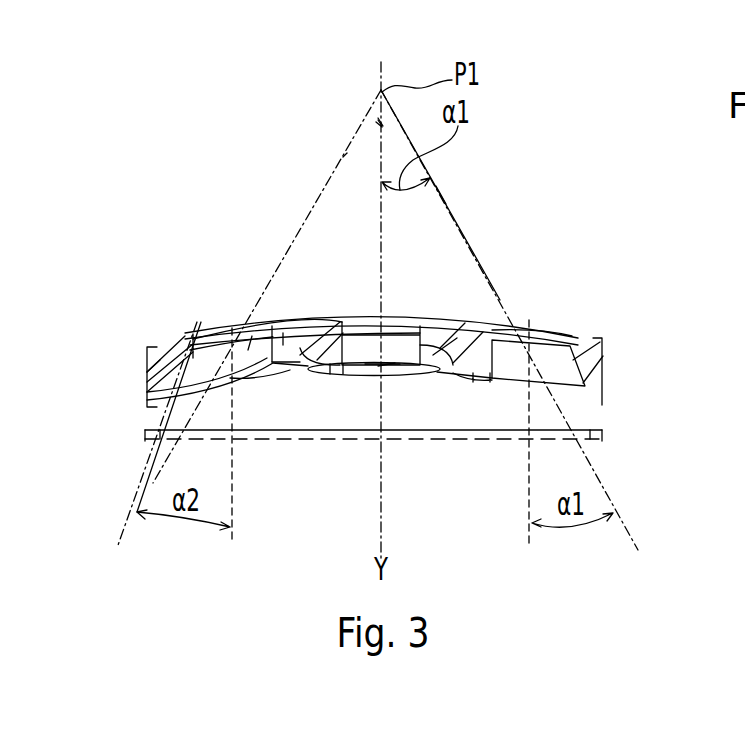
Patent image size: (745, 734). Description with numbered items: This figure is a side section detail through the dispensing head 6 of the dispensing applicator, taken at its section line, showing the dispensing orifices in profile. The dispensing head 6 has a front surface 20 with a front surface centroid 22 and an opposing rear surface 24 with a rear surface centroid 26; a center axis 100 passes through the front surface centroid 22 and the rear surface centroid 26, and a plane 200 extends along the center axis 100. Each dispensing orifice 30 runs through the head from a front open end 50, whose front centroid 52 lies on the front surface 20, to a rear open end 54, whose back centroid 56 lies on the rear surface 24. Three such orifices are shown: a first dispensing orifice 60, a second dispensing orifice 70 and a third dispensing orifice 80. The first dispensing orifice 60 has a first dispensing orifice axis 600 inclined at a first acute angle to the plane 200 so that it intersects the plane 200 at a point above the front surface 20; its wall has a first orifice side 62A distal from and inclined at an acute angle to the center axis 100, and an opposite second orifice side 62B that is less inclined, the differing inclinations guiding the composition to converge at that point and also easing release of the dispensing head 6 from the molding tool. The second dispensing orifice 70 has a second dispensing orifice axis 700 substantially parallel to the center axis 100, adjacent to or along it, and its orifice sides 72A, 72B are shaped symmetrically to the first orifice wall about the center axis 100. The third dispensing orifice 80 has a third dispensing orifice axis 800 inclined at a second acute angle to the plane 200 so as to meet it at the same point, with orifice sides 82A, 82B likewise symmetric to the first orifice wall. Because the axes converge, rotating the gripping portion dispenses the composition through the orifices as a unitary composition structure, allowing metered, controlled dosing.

The dispensing head 6 is at (536, 89).
The front surface 20 is at (284, 333).
The front surface centroid 22 is at (394, 322).
The rear surface 24 is at (303, 333).
The rear surface centroid 26 is at (382, 366).
The dispensing orifice 30 is at (567, 337).
The front open end 50 is at (190, 336).
The front centroid 52 is at (230, 336).
The rear open end 54 is at (148, 400).
The back centroid 56 is at (232, 377).
The first dispensing orifice 60 is at (562, 338).
The first orifice side 62A is at (598, 340).
The second orifice side 62B is at (512, 323).
The second dispensing orifice 70 is at (365, 348).
The orifice side 72A is at (456, 380).
The orifice side 72B is at (341, 368).
The third dispensing orifice 80 is at (162, 432).
The orifice side 82A is at (252, 336).
The orifice side 82B is at (150, 367).
The center axis 100 is at (382, 127).
The plane 200 is at (382, 125).
The first dispensing orifice axis 600 is at (445, 200).
The second dispensing orifice axis 700 is at (383, 126).
The third dispensing orifice axis 800 is at (343, 157).